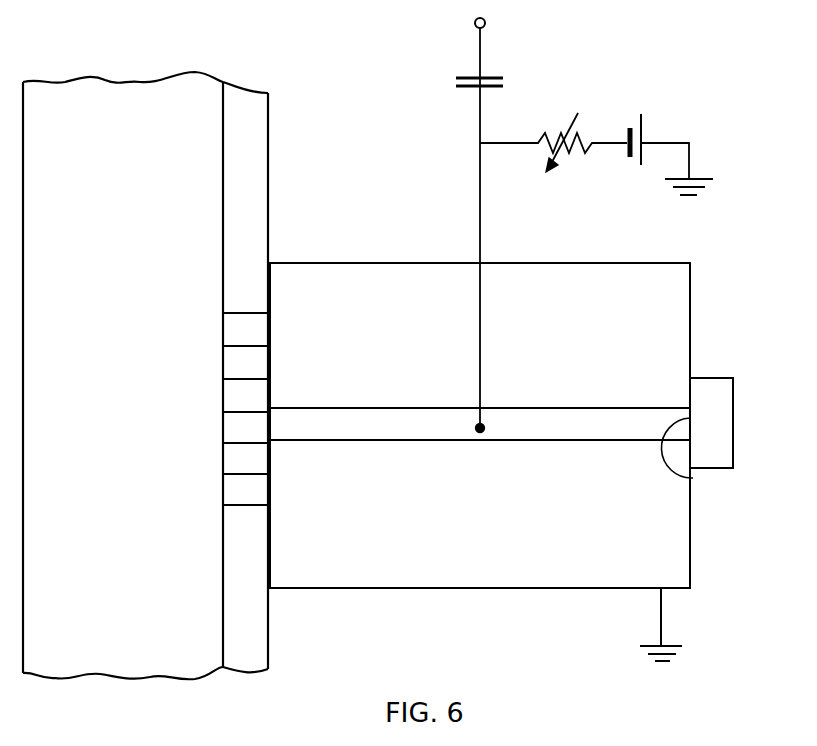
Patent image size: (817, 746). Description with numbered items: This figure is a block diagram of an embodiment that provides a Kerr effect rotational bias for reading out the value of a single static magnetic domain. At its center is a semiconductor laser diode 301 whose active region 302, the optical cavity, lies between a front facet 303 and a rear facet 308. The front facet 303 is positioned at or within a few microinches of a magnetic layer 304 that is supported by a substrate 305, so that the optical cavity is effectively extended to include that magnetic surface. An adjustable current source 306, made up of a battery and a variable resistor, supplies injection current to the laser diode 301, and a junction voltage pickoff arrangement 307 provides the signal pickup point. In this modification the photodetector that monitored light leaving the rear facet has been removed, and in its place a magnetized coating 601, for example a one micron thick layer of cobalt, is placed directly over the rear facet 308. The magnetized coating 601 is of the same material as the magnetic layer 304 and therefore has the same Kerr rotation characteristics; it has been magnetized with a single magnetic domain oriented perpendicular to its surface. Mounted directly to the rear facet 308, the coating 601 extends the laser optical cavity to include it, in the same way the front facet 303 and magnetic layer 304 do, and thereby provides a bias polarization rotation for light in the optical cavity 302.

The semiconductor laser diode 301 is at (690, 565).
The active region 302 is at (637, 440).
The front facet 303 is at (272, 427).
The magnetic layer 304 is at (243, 107).
The substrate 305 is at (137, 97).
The adjustable current source 306 is at (640, 125).
The junction voltage pickoff arrangement 307 is at (493, 78).
The rear facet 308 is at (693, 478).
The magnetized coating 601 is at (728, 405).